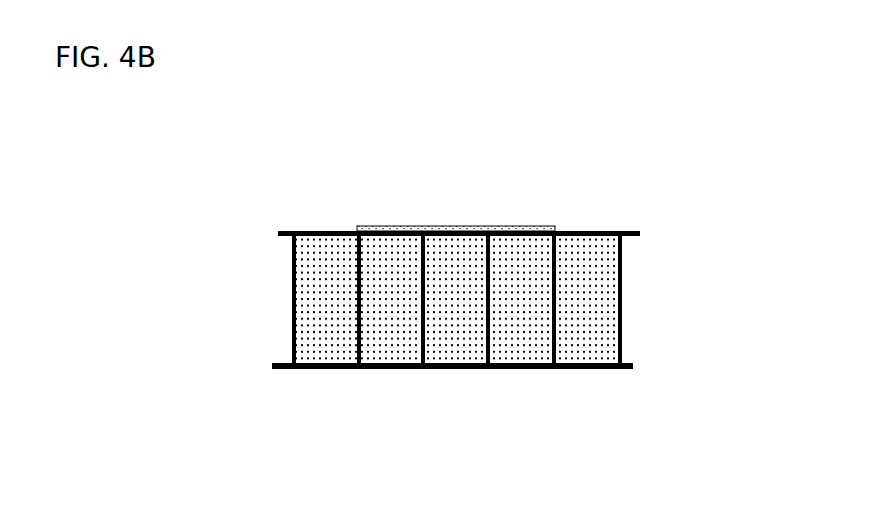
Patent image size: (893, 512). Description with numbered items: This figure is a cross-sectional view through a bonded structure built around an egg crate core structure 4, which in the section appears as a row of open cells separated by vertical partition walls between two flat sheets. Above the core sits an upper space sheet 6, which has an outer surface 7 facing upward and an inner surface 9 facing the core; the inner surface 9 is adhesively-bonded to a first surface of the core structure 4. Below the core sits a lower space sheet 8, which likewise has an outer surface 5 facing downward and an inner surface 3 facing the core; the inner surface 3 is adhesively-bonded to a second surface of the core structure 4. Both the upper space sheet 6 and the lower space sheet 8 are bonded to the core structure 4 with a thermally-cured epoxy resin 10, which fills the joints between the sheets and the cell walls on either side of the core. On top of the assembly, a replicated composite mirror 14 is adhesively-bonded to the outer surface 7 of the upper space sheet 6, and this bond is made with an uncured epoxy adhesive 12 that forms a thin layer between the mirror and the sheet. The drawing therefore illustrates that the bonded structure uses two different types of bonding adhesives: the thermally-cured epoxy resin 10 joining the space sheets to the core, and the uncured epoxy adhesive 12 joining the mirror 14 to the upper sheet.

The inner surface of lower space sheet 3 is at (282, 362).
The egg crate core structure 4 is at (511, 317).
The outer surface of lower space sheet 5 is at (615, 370).
The upper space sheet 6 is at (332, 232).
The outer surface of upper space sheet 7 is at (290, 232).
The lower space sheet 8 is at (448, 368).
The inner surface of upper space sheet 9 is at (636, 240).
The thermally-cured epoxy resin 10 is at (326, 360).
The uncured epoxy adhesive 12 is at (560, 228).
The replicated composite mirror 14 is at (459, 226).